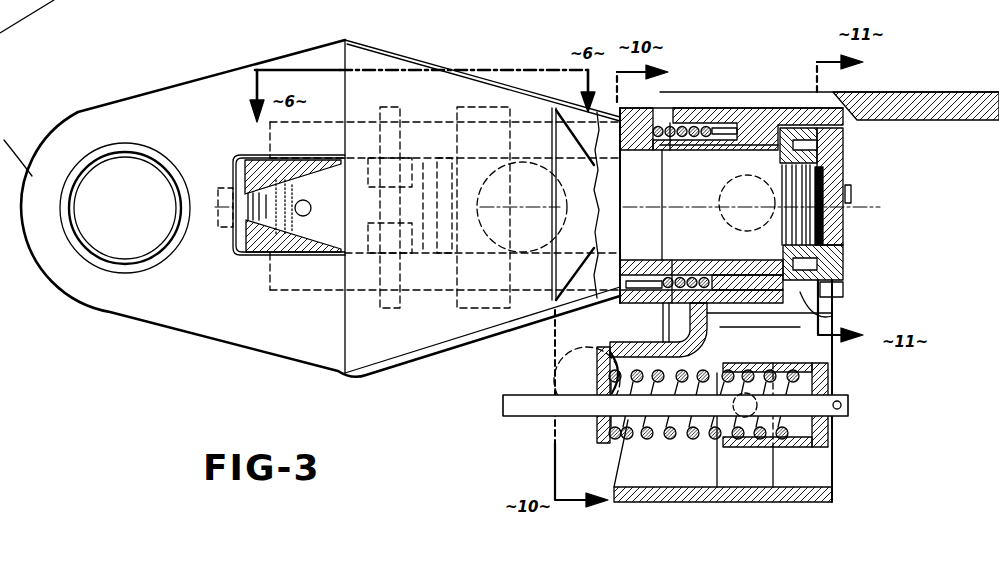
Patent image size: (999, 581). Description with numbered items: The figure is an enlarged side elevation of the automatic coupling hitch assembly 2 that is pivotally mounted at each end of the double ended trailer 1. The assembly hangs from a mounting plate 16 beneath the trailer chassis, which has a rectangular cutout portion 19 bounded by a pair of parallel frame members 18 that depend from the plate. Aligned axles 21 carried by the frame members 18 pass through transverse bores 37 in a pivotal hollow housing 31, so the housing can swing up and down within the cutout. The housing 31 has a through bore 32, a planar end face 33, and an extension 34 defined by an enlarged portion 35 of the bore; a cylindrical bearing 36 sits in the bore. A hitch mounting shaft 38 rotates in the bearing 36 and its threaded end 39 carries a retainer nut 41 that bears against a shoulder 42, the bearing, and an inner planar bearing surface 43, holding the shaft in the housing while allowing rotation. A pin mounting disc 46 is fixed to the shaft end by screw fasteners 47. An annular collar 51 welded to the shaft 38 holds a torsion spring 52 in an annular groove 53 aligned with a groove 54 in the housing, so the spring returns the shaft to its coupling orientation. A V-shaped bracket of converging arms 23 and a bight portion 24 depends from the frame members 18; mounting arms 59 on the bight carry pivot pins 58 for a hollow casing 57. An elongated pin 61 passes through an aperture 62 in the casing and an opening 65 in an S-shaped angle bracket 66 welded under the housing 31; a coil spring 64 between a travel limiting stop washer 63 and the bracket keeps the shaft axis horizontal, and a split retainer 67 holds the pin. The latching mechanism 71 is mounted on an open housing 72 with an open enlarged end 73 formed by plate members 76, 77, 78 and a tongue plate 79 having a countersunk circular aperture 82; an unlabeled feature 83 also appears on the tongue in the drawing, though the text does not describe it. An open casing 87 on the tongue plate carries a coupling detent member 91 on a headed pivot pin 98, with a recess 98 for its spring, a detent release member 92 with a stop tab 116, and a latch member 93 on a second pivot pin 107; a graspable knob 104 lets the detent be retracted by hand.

The double ended trailer 1 is at (16, 154).
The automatic coupling hitch assembly 2 is at (213, 350).
The mounting plate 16 is at (972, 118).
The frame members 18 is at (856, 299).
The cutout portion 19 is at (834, 96).
The axles 21 is at (722, 218).
The converging arms 23 is at (825, 353).
The bight portion 24 is at (832, 494).
The pivotal hollow housing 31 is at (738, 140).
The through bore 32 is at (783, 128).
The planar end face 33 is at (663, 150).
The extension 34 is at (830, 277).
The enlarged portion of through bore 35 is at (823, 316).
The cylindrical bearing 36 is at (737, 150).
The aligned bores 37 is at (733, 237).
The hitch mounting shaft 38 is at (644, 186).
The threaded shaft end 39 is at (820, 160).
The retainer nut 41 is at (852, 207).
The shoulder 42 is at (777, 160).
The inner planar bearing surface 43 is at (778, 238).
The pin mounting disc 46 is at (845, 175).
The screw fasteners 47 is at (851, 196).
The annular collar 51 is at (731, 119).
The torsion spring 52 is at (688, 123).
The annular groove in collar 53 is at (668, 123).
The annular groove in housing 54 is at (662, 320).
The hollow casing 57 is at (642, 280).
The pivot pins 58 is at (714, 127).
The mounting arms 59 is at (723, 460).
The elongated pin 61 is at (503, 408).
The aperture 62 is at (829, 379).
The travel limiting stop washer 63 is at (817, 366).
The coil spring 64 is at (703, 368).
The opening 65 is at (596, 420).
The S-shaped angle bracket 66 is at (606, 447).
The split retainer 67 is at (850, 407).
The latching mechanism 71 is at (330, 274).
The open housing 72 is at (397, 84).
The open enlarged end 73 is at (340, 93).
The plate member 76 is at (457, 66).
The plate member 77 is at (410, 358).
The plate member 78 is at (427, 98).
The tongue plate 79 is at (195, 137).
The circular aperture 82 is at (110, 152).
The hole 83 is at (80, 175).
The open casing 87 is at (270, 286).
The coupling detent member 91 is at (548, 162).
The detent release member 92 is at (268, 166).
The latch member 93 is at (410, 240).
The headed pivot pin 98 is at (497, 310).
The graspable knob 104 is at (555, 372).
The second pivot pin 107 is at (378, 304).
The stop tab 116 is at (218, 228).